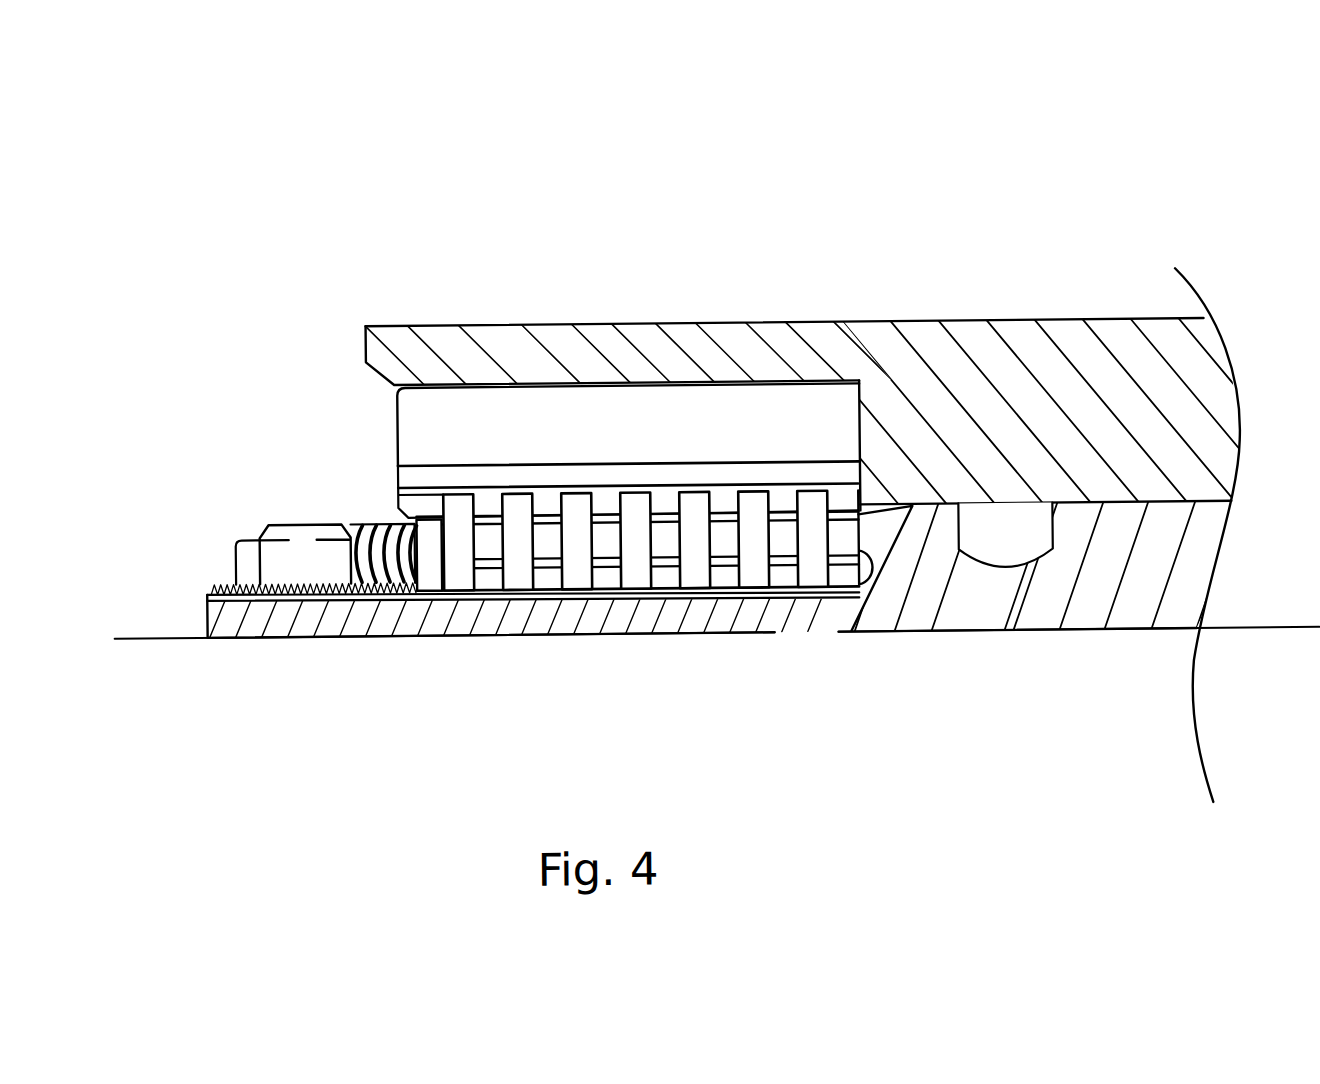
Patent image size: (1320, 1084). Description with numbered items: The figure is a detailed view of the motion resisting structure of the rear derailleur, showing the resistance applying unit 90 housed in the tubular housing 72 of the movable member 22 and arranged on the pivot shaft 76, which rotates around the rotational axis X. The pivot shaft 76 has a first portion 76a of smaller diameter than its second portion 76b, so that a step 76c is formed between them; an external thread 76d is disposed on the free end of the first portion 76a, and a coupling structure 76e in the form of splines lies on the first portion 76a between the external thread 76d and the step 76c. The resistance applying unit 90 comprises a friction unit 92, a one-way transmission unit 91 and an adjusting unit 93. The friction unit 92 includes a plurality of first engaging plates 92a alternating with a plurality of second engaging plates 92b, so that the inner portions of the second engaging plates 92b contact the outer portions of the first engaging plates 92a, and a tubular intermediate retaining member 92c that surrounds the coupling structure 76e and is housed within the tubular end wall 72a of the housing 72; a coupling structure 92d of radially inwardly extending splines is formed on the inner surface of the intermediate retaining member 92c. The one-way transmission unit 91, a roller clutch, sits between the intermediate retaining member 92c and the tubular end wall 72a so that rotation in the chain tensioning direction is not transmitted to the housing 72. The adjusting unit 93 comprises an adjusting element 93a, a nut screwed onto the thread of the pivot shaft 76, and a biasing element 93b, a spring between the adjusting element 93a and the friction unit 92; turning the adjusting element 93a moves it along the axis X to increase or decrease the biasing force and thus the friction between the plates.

The movable member 22 is at (865, 206).
The tubular housing 72 is at (1007, 351).
The tubular end wall 72a is at (560, 356).
The pivot shaft 76 is at (1040, 631).
The first portion 76a is at (701, 648).
The second portion 76b is at (1098, 609).
The step 76c is at (863, 554).
The external thread 76d is at (227, 578).
The coupling structure 76e is at (578, 576).
The resistance applying unit 90 is at (314, 404).
The one-way transmission unit 91 is at (748, 418).
The friction unit 92 is at (535, 512).
The first engaging plate 92a is at (425, 554).
The second engaging plate 92b is at (455, 525).
The intermediate retaining member 92c is at (427, 474).
The coupling structure 92d is at (413, 500).
The adjusting unit 93 is at (298, 664).
The adjusting element 93a is at (277, 556).
The biasing element 93b is at (397, 544).
The rotational axis X is at (1237, 633).